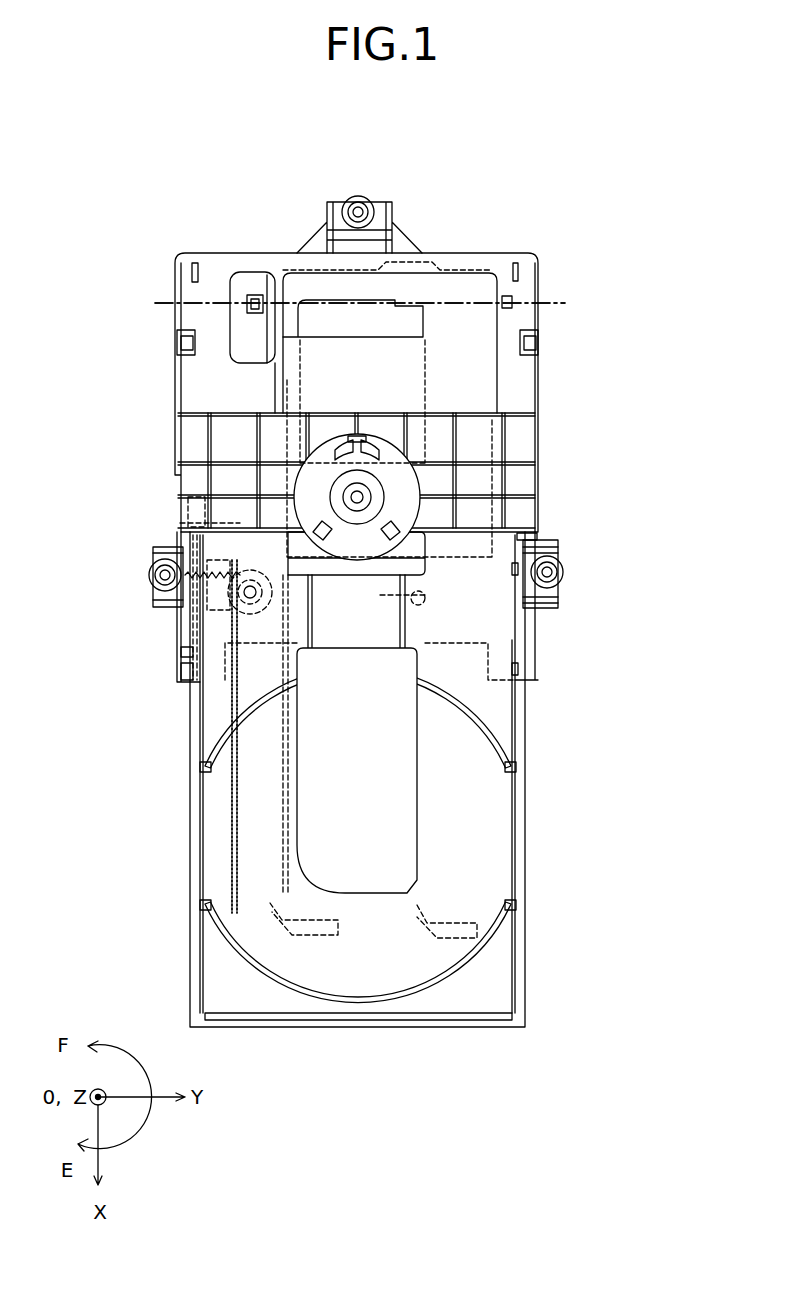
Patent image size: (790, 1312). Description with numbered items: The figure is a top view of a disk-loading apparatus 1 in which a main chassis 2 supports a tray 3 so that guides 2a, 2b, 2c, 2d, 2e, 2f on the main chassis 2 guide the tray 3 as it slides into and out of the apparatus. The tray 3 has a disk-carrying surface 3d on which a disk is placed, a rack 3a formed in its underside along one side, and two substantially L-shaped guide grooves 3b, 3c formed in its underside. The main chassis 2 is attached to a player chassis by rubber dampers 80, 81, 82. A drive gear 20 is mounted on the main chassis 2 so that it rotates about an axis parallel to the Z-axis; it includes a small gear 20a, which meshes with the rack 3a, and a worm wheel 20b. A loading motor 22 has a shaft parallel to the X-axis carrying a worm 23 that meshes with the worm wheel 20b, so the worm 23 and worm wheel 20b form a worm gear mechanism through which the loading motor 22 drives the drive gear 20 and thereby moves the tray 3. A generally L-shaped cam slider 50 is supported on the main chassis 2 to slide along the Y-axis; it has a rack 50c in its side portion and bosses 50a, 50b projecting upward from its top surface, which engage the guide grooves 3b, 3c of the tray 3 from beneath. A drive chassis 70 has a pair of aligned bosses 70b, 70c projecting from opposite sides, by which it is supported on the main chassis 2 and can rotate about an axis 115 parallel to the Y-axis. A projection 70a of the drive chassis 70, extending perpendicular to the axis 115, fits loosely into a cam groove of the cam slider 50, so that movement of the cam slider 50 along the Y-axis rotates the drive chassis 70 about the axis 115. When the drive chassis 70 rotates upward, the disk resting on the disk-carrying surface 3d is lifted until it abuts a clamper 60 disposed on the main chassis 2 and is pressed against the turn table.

The disc device 1 is at (479, 202).
The main chassis 2 is at (533, 290).
The guide 2a is at (188, 683).
The guide 2b is at (195, 540).
The guide 2c is at (190, 270).
The guide 2d is at (538, 663).
The guide 2e is at (547, 538).
The guide 2f is at (520, 268).
The tray 3 is at (500, 960).
The rack 3a is at (232, 840).
The guide groove 3b is at (280, 920).
The guide groove 3c is at (415, 922).
The disk-carrying surface 3d is at (488, 858).
The drive gear 20 is at (190, 630).
The small gear 20a is at (305, 592).
The worm wheel 20b is at (250, 616).
The loading motor 22 is at (178, 480).
The worm 23 is at (178, 616).
The cam slider 50 is at (357, 734).
The boss 50a is at (340, 600).
The boss 50b is at (425, 596).
The rack 50c is at (177, 597).
The clamper 60 is at (345, 500).
The drive chassis 70 is at (295, 381).
The projection 70a is at (398, 563).
The boss 70b is at (512, 304).
The boss 70c is at (258, 296).
The rubber damper 80 is at (565, 572).
The rubber damper 81 is at (357, 200).
The rubber damper 82 is at (150, 572).
The axis 115 is at (560, 303).